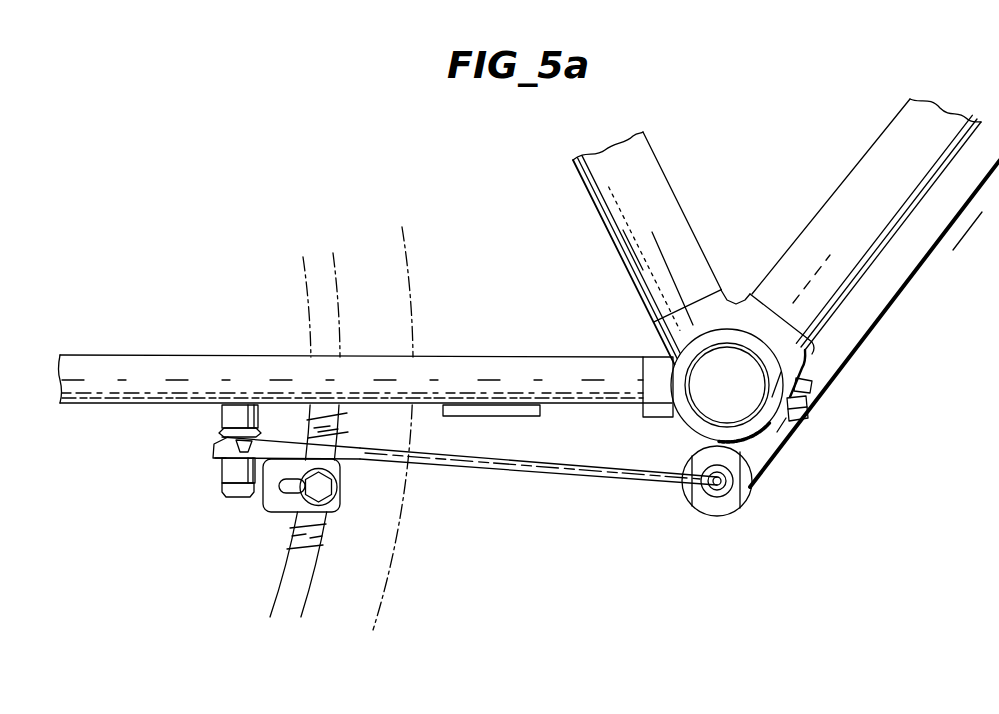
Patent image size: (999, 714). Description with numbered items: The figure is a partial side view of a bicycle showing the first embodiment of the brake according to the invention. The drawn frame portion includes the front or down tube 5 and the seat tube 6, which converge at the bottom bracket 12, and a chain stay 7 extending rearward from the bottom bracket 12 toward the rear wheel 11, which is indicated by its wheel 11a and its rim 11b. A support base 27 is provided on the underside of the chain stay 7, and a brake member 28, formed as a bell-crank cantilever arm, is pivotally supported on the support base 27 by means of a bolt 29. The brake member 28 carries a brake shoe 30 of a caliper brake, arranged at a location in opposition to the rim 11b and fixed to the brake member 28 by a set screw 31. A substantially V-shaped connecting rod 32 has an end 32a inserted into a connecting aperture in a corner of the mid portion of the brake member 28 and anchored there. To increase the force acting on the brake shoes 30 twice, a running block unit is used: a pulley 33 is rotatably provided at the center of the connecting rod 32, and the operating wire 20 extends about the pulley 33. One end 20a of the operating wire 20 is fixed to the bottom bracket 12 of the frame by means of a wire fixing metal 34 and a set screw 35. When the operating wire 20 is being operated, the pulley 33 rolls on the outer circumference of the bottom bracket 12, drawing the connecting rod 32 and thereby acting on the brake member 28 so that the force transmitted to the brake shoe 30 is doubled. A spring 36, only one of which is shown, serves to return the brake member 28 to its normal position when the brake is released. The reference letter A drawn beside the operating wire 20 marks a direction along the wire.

The front or down tube 5 is at (855, 165).
The seat tube 6 is at (688, 223).
The chain stays 7 is at (450, 357).
The rear wheel 11 is at (452, 600).
The wheel 11a is at (368, 612).
The rim 11b is at (282, 582).
The bottom bracket 12 is at (763, 427).
The operating wire 20 is at (913, 272).
The end of operating wire 20a is at (806, 382).
The support bases 27 is at (223, 417).
The brake members 28 is at (215, 455).
The bolts 29 is at (232, 498).
The brake shoes 30 is at (332, 528).
The set screws 31 is at (332, 483).
The connecting rod 32 is at (547, 470).
The ends of connecting rod 32a is at (223, 472).
The pulley 33 is at (710, 510).
The wire fixing metal 34 is at (787, 433).
The set screw 35 is at (805, 410).
The spring 36 is at (220, 434).
The direction arrow A is at (968, 231).